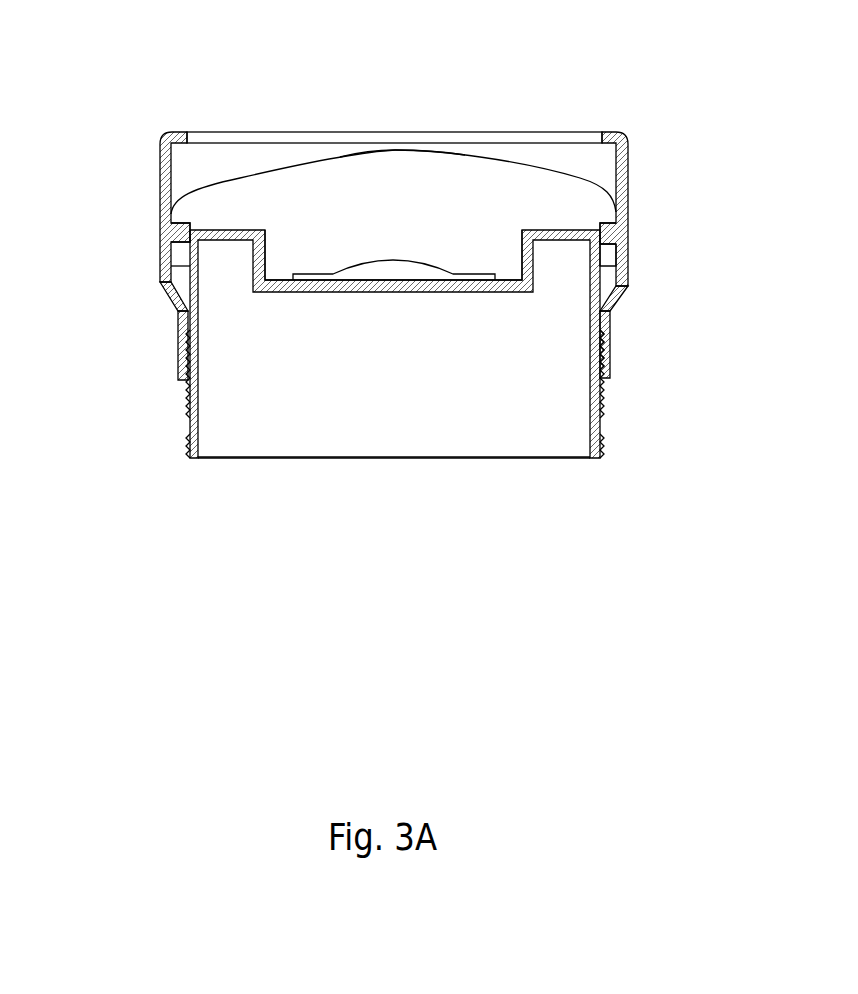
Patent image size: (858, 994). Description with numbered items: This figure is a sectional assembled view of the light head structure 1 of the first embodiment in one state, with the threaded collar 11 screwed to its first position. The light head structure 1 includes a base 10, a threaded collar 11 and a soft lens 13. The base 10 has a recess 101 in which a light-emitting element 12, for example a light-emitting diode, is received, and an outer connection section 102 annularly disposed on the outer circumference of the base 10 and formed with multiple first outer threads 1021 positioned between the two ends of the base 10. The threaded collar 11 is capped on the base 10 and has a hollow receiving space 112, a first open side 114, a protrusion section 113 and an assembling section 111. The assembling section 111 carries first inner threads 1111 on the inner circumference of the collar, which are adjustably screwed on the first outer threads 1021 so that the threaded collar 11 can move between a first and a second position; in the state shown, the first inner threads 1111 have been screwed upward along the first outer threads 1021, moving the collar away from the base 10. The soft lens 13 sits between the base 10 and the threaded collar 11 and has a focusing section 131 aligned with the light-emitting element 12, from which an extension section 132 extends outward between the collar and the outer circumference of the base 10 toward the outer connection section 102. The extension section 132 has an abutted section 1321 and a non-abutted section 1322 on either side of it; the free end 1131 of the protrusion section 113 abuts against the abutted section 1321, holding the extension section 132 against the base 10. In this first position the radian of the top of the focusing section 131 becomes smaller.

The light head structure 1 is at (766, 105).
The base 10 is at (196, 231).
The recess 101 is at (508, 246).
The outer connection section 102 is at (601, 397).
The first outer threads 1021 is at (601, 405).
The threaded collar 11 is at (616, 136).
The assembling section 111 is at (607, 348).
The first inner threads 1111 is at (607, 360).
The receiving space 112 is at (166, 291).
The protrusion section 113 is at (176, 240).
The free end 1131 is at (192, 232).
The first open side 114 is at (193, 138).
The light-emitting element 12 is at (410, 270).
The soft lens 13 is at (290, 160).
The focusing section 131 is at (386, 163).
The extension section 132 is at (785, 207).
The abutted section 1321 is at (612, 224).
The non-abutted section 1322 is at (608, 256).